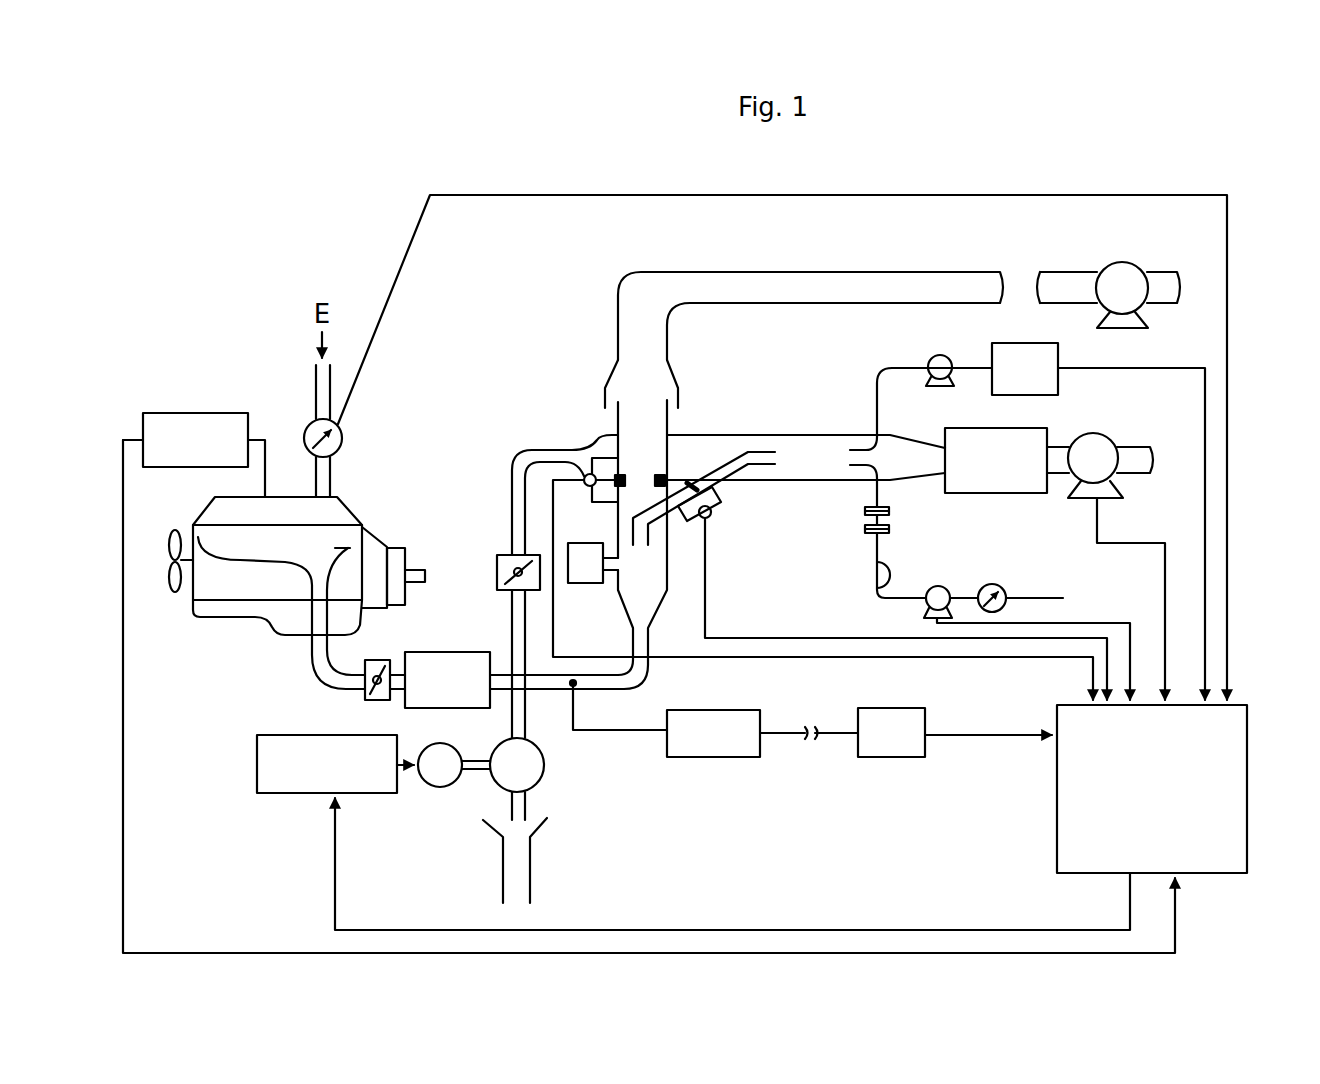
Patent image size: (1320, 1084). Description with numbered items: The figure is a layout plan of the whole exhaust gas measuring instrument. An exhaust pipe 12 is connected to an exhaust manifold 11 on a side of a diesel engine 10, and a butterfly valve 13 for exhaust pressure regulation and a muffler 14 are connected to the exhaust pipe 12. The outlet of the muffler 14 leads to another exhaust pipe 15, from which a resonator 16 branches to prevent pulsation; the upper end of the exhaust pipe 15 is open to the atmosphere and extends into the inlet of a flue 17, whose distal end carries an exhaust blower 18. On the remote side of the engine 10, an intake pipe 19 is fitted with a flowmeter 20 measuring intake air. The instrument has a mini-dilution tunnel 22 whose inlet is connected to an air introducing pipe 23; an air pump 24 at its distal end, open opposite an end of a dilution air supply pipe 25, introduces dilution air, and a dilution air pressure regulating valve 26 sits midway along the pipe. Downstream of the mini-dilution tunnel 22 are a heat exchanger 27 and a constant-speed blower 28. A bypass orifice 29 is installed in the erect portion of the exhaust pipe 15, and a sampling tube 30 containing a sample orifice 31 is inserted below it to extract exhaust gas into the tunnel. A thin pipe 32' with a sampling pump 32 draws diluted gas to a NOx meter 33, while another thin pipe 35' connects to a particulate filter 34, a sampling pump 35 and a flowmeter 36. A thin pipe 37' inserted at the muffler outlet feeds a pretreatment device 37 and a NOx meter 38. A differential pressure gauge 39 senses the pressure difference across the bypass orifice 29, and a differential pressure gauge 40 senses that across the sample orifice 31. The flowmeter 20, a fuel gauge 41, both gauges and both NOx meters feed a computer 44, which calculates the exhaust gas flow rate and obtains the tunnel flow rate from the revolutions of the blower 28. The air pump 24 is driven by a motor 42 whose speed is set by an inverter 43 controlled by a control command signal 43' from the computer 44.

The diesel engine 10 is at (267, 590).
The exhaust manifold 11 is at (345, 548).
The exhaust pipe 12 is at (312, 660).
The butterfly valve 13 is at (360, 697).
The muffler 14 is at (448, 652).
The exhaust pipe 15 is at (667, 570).
The resonator 16 is at (585, 583).
The flue 17 is at (797, 272).
The exhaust blower 18 is at (1125, 280).
The intake pipe 19 is at (332, 465).
The flowmeter 20 is at (340, 425).
The mini-dilution tunnel 22 is at (803, 440).
The air introducing pipe 23 is at (512, 492).
The air pump 24 is at (545, 775).
The dilution air supply pipe 25 is at (530, 868).
The dilution air pressure regulating valve 26 is at (497, 568).
The heat exchanger 27 is at (1005, 428).
The blower 28 is at (1105, 430).
The bypass orifice 29 is at (625, 480).
The sampling tube 30 is at (722, 483).
The sample orifice 31 is at (718, 497).
The sampling pump 32 is at (926, 348).
The thin pipe 32' is at (912, 416).
The NOx meter 33 is at (1017, 343).
The particulate filter 34 is at (890, 510).
The sampling pump 35 is at (960, 578).
The thin pipe 35' is at (879, 580).
The flowmeter 36 is at (1008, 588).
The pretreatment device 37 is at (732, 715).
The thin pipe 37' is at (618, 705).
The NOx meter 38 is at (895, 708).
The differential pressure gauge 39 is at (583, 474).
The differential pressure gauge 40 is at (709, 520).
The fuel gauge 41 is at (200, 413).
The motor 42 is at (440, 787).
The inverter 43 is at (281, 770).
The control command signal 43' is at (732, 864).
The computer (CPU) 44 is at (1247, 762).